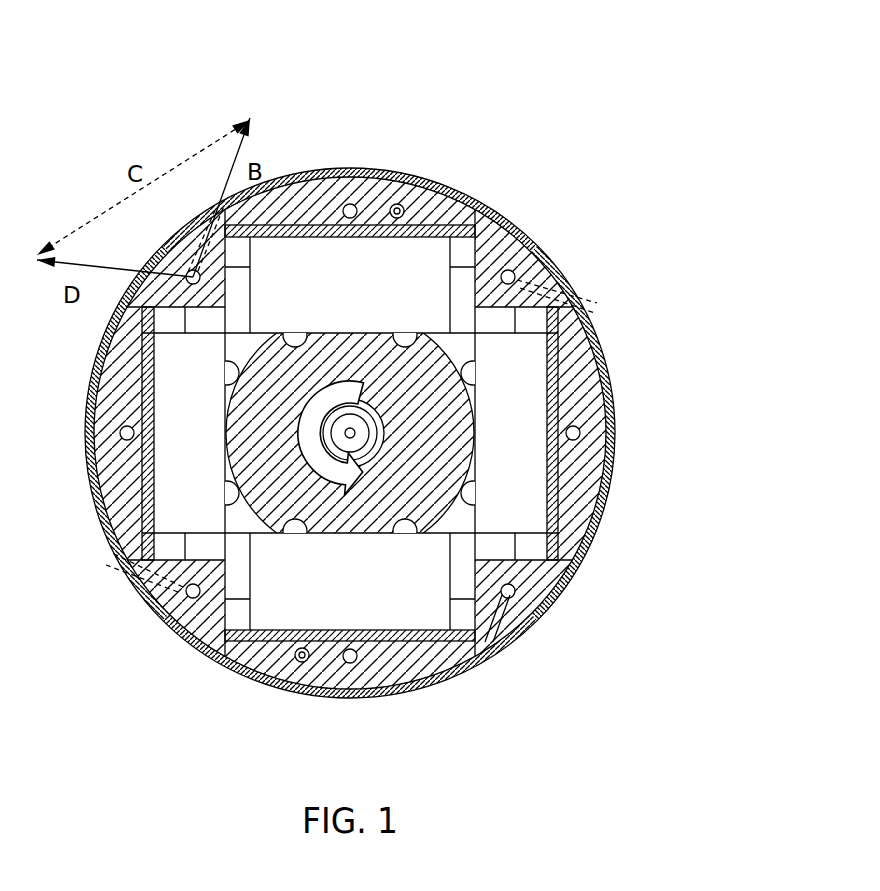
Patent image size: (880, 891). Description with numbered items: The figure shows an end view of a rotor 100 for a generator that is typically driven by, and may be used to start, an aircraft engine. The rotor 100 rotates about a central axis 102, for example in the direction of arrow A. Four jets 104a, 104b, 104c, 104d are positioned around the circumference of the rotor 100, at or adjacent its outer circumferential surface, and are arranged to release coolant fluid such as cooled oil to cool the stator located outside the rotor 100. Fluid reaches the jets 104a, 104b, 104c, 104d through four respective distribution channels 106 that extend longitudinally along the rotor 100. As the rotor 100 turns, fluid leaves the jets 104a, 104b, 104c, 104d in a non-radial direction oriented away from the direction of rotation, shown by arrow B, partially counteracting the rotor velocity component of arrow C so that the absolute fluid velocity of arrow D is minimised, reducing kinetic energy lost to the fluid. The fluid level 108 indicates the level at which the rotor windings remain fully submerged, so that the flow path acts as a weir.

The rotor 100 is at (618, 90).
The central axis 102 is at (350, 440).
The jet 104a is at (587, 297).
The jet 104b is at (120, 568).
The jet 104c is at (502, 650).
The jet 104d is at (215, 208).
The distribution channel 106 is at (190, 273).
The fluid level 108 is at (433, 503).